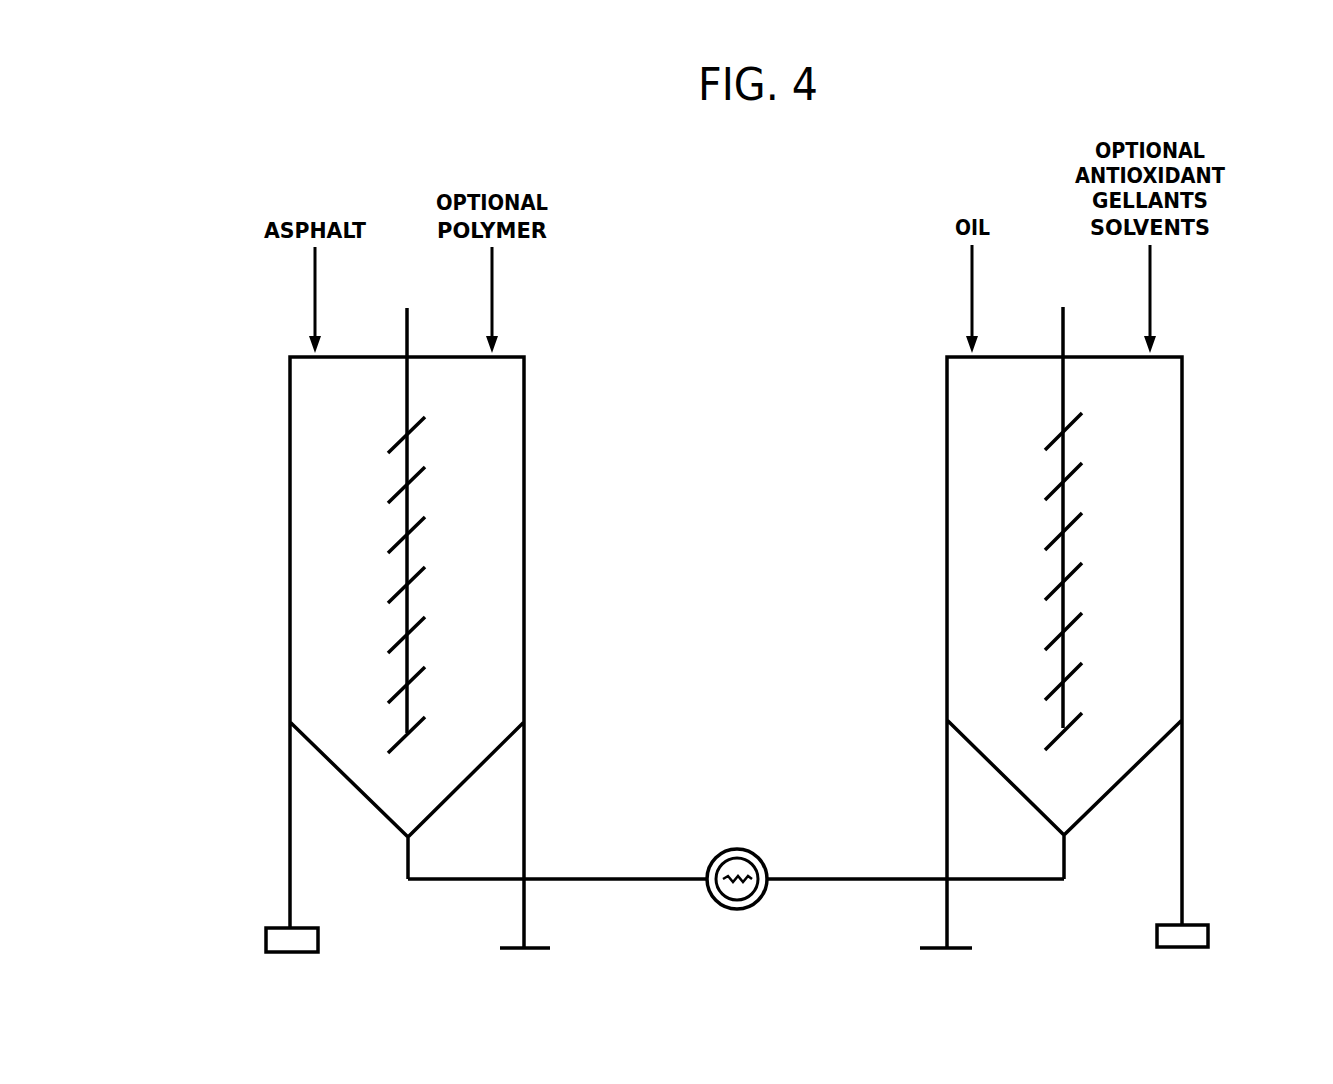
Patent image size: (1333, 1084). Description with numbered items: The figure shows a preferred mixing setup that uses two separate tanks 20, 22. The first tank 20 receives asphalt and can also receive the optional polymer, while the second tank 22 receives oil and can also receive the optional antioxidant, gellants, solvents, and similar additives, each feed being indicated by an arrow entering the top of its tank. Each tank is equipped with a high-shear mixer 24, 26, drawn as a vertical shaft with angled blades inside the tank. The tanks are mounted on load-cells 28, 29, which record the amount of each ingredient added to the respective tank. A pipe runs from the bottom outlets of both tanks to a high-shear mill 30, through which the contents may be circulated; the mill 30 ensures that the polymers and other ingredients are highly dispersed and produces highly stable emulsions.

The tank 20 is at (270, 464).
The tank 22 is at (927, 462).
The high-shear mixer 24 is at (385, 409).
The high-shear mixer 26 is at (1043, 407).
The load-cell 28 is at (249, 920).
The load-cell 29 is at (1224, 908).
The high-shear mill 30 is at (699, 850).